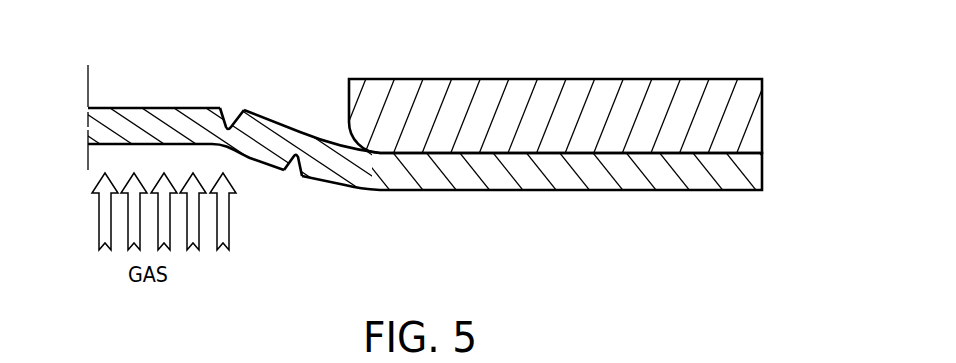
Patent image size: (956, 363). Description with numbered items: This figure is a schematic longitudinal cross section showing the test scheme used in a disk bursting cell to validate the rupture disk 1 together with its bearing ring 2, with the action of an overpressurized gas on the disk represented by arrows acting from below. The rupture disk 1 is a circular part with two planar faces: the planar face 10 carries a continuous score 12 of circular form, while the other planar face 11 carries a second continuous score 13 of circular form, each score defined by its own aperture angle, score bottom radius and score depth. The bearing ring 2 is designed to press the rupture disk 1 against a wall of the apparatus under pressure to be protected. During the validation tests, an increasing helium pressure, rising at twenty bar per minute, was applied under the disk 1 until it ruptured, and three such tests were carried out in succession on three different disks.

The rupture disk 1 is at (572, 192).
The bearing ring 2 is at (550, 79).
The planar face 10 is at (152, 145).
The other planar face 11 is at (130, 108).
The continuous score 12 is at (292, 175).
The continuous score 13 is at (233, 112).